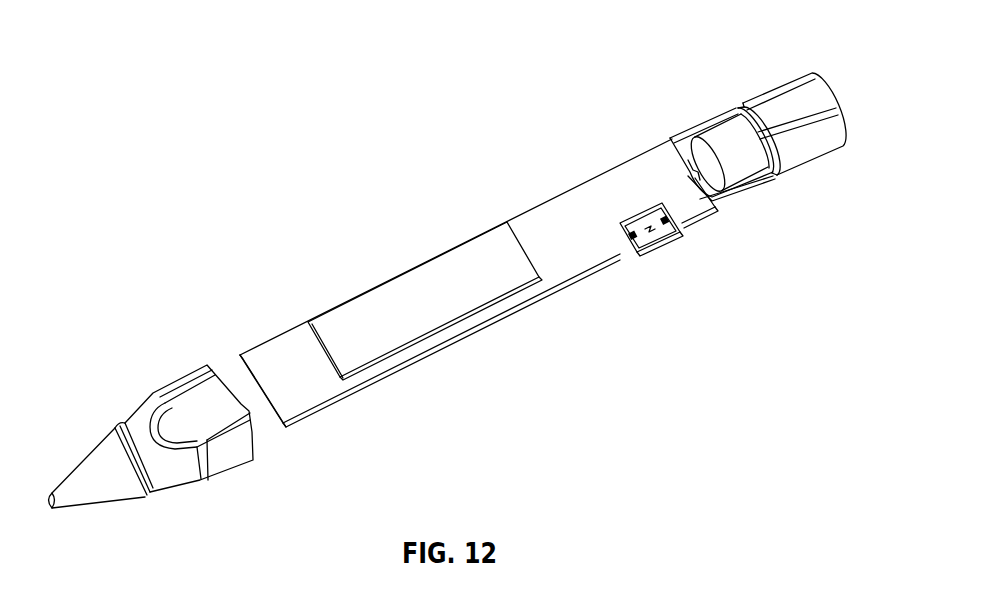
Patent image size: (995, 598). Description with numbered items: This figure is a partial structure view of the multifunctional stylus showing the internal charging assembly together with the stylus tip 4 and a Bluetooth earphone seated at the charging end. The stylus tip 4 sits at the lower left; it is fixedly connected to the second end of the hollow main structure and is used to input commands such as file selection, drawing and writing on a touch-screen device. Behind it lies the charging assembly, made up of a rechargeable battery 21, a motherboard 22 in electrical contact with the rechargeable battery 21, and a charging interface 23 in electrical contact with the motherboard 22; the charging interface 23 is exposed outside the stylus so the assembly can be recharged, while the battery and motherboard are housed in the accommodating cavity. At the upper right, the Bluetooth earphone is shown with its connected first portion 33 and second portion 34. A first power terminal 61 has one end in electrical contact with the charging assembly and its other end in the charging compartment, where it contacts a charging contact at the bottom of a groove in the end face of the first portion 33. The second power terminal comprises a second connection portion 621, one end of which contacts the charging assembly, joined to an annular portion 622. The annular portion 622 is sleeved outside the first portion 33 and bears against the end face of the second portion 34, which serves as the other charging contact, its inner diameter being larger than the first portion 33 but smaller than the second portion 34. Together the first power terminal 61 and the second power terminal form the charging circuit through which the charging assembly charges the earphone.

The stylus tip 4 is at (102, 470).
The rechargeable battery 21 is at (445, 282).
The motherboard 22 is at (285, 355).
The charging interface 23 is at (667, 242).
The first portion 33 is at (748, 162).
The second portion 34 is at (810, 142).
The first power terminal 61 is at (690, 162).
The second connection portion 621 is at (741, 197).
The annular portion 622 is at (738, 110).